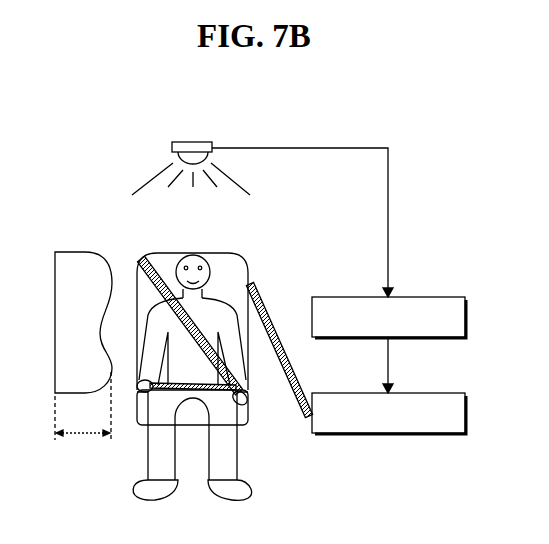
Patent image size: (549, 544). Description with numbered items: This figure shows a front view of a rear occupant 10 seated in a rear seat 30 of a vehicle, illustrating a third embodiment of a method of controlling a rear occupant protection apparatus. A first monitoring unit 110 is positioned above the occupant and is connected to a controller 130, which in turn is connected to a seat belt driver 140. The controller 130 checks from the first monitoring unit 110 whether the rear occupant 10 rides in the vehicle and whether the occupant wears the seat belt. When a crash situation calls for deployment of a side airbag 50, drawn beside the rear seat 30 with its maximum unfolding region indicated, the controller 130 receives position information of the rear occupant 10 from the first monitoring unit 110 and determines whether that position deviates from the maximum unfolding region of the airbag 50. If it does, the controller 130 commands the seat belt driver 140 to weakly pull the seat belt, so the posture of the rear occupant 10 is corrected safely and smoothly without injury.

The first monitoring unit 110 is at (190, 141).
The rear occupant 10 is at (193, 254).
The rear seat 30 is at (238, 272).
The airbag 50 is at (73, 258).
The controller 130 is at (422, 297).
The seat belt driver 140 is at (422, 393).